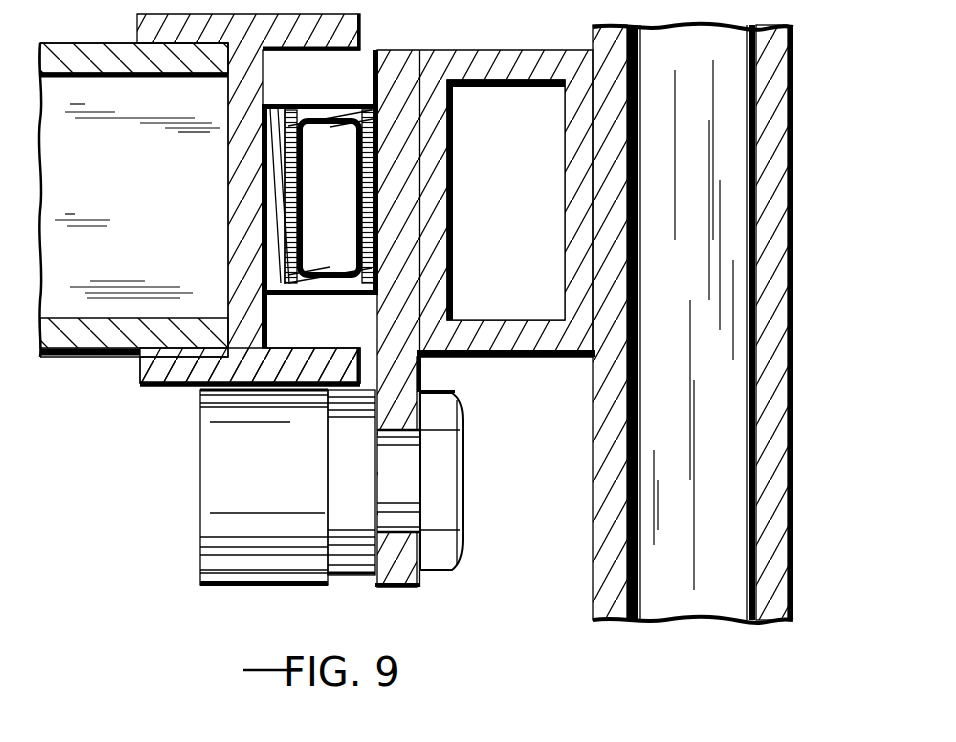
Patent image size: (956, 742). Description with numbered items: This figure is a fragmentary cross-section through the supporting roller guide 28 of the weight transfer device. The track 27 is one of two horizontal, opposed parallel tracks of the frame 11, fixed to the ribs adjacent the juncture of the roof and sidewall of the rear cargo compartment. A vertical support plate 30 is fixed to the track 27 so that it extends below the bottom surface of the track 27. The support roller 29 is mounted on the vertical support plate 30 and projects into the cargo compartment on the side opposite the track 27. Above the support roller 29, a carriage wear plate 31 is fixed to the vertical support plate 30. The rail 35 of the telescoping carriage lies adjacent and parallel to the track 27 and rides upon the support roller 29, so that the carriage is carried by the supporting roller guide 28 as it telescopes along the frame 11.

The frame 11 is at (810, 202).
The track 27 is at (517, 202).
The supporting roller guide 28 is at (420, 368).
The support roller 29 is at (220, 488).
The vertical support plate 30 is at (133, 170).
The carriage wear plate 31 is at (262, 212).
The rail 35 is at (138, 387).